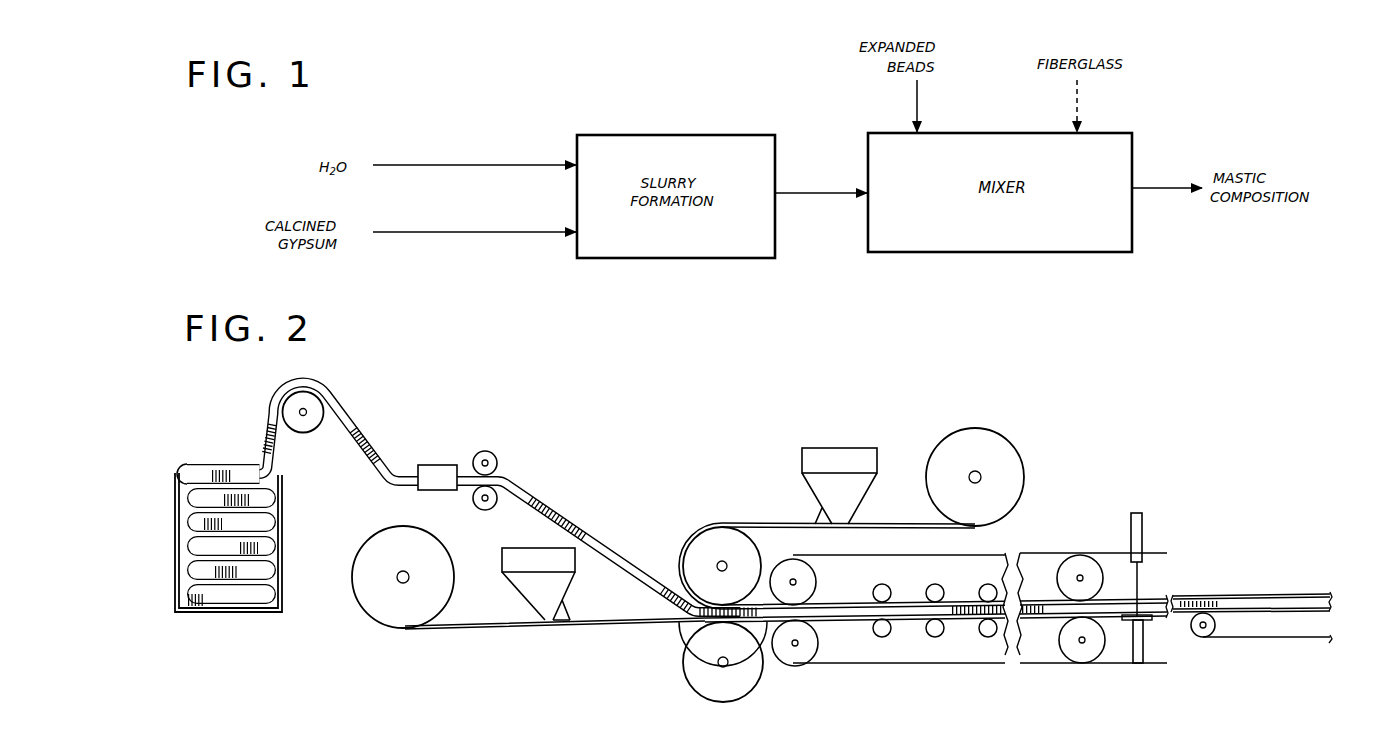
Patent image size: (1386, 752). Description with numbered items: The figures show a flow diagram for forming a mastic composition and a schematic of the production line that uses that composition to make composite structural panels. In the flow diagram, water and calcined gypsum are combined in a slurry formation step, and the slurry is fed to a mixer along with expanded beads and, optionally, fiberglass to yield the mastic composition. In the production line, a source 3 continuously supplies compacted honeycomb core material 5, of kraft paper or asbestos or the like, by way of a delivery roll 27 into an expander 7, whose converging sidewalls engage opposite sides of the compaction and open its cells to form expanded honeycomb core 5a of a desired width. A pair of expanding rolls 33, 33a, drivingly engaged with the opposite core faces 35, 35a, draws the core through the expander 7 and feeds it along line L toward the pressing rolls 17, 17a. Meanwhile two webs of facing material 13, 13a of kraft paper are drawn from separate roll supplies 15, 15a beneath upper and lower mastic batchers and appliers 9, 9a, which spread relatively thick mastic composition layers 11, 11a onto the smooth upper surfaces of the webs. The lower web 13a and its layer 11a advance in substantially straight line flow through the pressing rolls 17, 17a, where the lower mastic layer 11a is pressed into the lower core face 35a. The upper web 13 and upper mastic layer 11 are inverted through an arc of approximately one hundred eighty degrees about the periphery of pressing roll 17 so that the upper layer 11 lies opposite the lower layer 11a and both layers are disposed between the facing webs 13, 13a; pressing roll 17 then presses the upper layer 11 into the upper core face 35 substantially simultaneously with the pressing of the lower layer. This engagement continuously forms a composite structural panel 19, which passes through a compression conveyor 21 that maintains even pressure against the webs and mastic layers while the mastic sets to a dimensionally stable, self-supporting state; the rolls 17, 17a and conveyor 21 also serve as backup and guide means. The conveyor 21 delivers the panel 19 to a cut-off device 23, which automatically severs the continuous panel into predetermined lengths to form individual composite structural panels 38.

The source 3 is at (233, 463).
The compacted honeycomb core material 5 is at (270, 419).
The expanded honeycomb core 5a is at (546, 524).
The expander 7 is at (440, 465).
The upper mastic composition batcher and applier 9 is at (805, 461).
The lower mastic composition batcher and applier 9a is at (505, 556).
The upper mastic composition layer 11 is at (770, 522).
The lower mastic composition layer 11a is at (638, 618).
The upper web of facing material 13 is at (904, 524).
The lower web of facing material 13a is at (514, 627).
The upper roll supply of facing material 15 is at (942, 440).
The lower roll supply of facing material 15a is at (372, 545).
The upper pressing roll 17 is at (697, 548).
The lower pressing roll 17a is at (694, 690).
The composite structural panel 19 is at (1128, 578).
The compression conveyor 21 is at (1040, 553).
The cut-off device 23 is at (1133, 524).
The delivery roll 27 is at (301, 433).
The upper expanding roll 33 is at (492, 452).
The lower expanding roll 33a is at (483, 510).
The upper core face 35 is at (597, 528).
The lower core face 35a is at (556, 512).
The individual composite structural panel segments 38 is at (1235, 577).
The line L is at (660, 461).